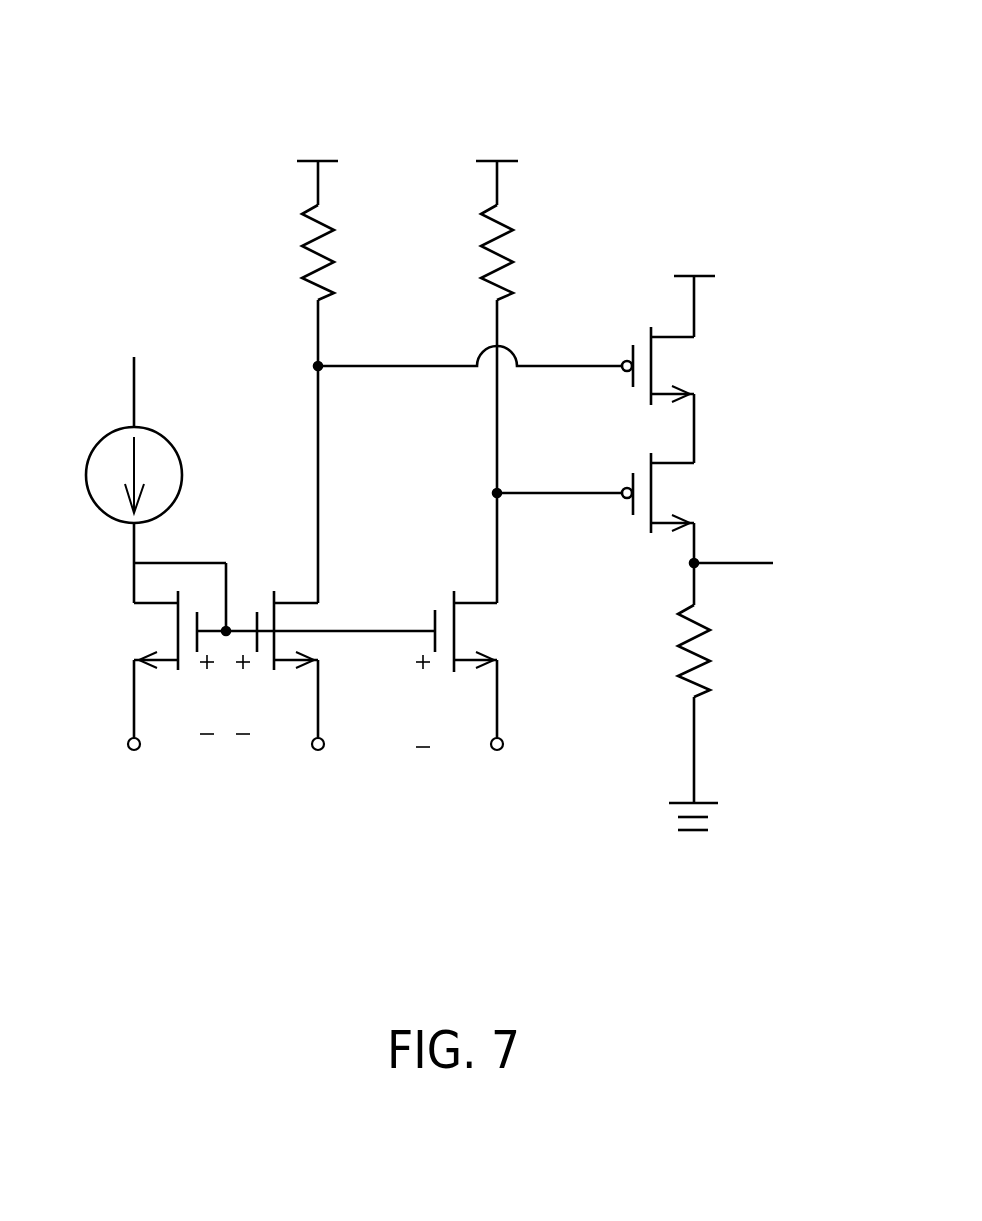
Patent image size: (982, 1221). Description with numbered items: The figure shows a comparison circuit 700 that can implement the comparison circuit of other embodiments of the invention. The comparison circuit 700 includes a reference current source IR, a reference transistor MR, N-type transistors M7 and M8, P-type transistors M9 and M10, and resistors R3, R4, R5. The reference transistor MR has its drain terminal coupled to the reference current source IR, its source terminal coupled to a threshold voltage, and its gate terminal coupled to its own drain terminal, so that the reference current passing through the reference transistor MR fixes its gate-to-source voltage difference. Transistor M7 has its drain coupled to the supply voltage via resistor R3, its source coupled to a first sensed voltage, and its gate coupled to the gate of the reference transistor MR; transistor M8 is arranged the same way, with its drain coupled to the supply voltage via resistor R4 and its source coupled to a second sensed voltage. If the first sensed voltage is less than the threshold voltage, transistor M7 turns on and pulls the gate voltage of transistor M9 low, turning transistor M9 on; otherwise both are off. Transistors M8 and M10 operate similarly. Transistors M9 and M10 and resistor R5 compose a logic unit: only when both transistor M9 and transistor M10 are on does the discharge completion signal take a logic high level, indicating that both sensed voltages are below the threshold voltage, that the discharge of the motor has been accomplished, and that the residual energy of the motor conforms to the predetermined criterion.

The comparison circuit 700 is at (752, 100).
The resistor R3 is at (301, 212).
The resistor R4 is at (487, 212).
The resistor R5 is at (719, 651).
The N-type transistor M7 is at (287, 609).
The N-type transistor M8 is at (490, 631).
The P-type transistor M9 is at (683, 322).
The P-type transistor M10 is at (689, 493).
The reference transistor MR is at (141, 630).
The reference current source IR is at (132, 440).